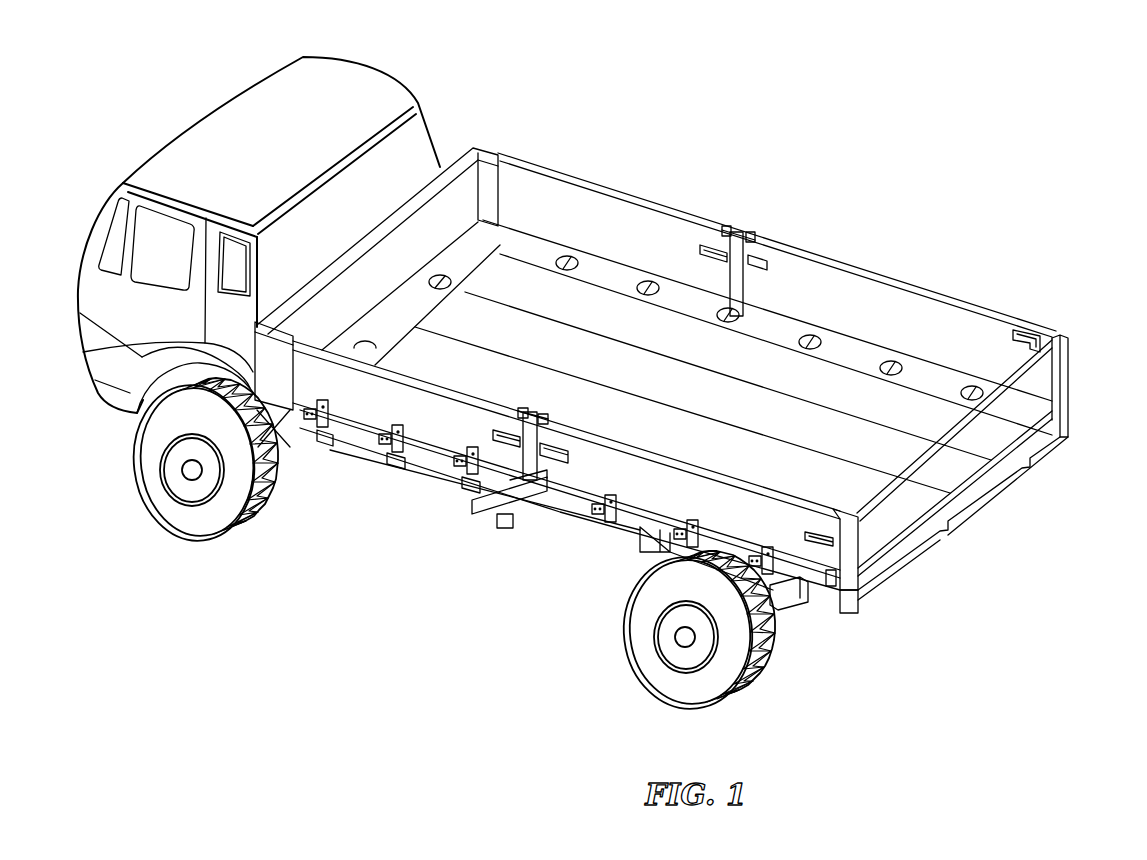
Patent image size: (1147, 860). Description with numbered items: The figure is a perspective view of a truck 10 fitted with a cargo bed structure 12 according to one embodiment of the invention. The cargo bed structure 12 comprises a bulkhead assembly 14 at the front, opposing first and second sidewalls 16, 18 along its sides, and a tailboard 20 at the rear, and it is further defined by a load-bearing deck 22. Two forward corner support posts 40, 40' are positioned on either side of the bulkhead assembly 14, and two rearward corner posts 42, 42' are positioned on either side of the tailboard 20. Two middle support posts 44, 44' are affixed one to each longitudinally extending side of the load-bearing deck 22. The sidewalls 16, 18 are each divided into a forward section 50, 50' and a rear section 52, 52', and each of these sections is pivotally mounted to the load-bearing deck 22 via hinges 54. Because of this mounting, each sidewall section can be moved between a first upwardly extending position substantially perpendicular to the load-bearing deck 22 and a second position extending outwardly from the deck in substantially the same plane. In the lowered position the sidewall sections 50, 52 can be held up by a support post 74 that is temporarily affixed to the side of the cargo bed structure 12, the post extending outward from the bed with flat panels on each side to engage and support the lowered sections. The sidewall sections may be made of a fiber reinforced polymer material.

The truck 10 is at (618, 70).
The cargo bed structure 12 is at (983, 358).
The bulkhead assembly 14 is at (460, 200).
The first sidewall 16 is at (692, 211).
The second sidewall 18 is at (394, 395).
The tailboard 20 is at (1013, 410).
The load-bearing deck 22 is at (638, 425).
The forward corner support post 40 is at (378, 195).
The forward corner support post 40' is at (293, 413).
The rearward corner post 42 is at (1087, 386).
The rearward corner post 42' is at (826, 590).
The middle support post 44 is at (784, 253).
The middle support post 44' is at (483, 495).
The forward section 50 is at (776, 235).
The forward section 50' is at (155, 397).
The rear section 52 is at (777, 242).
The rear section 52' is at (635, 472).
The hinges 54 is at (535, 455).
The support post 74 is at (505, 530).